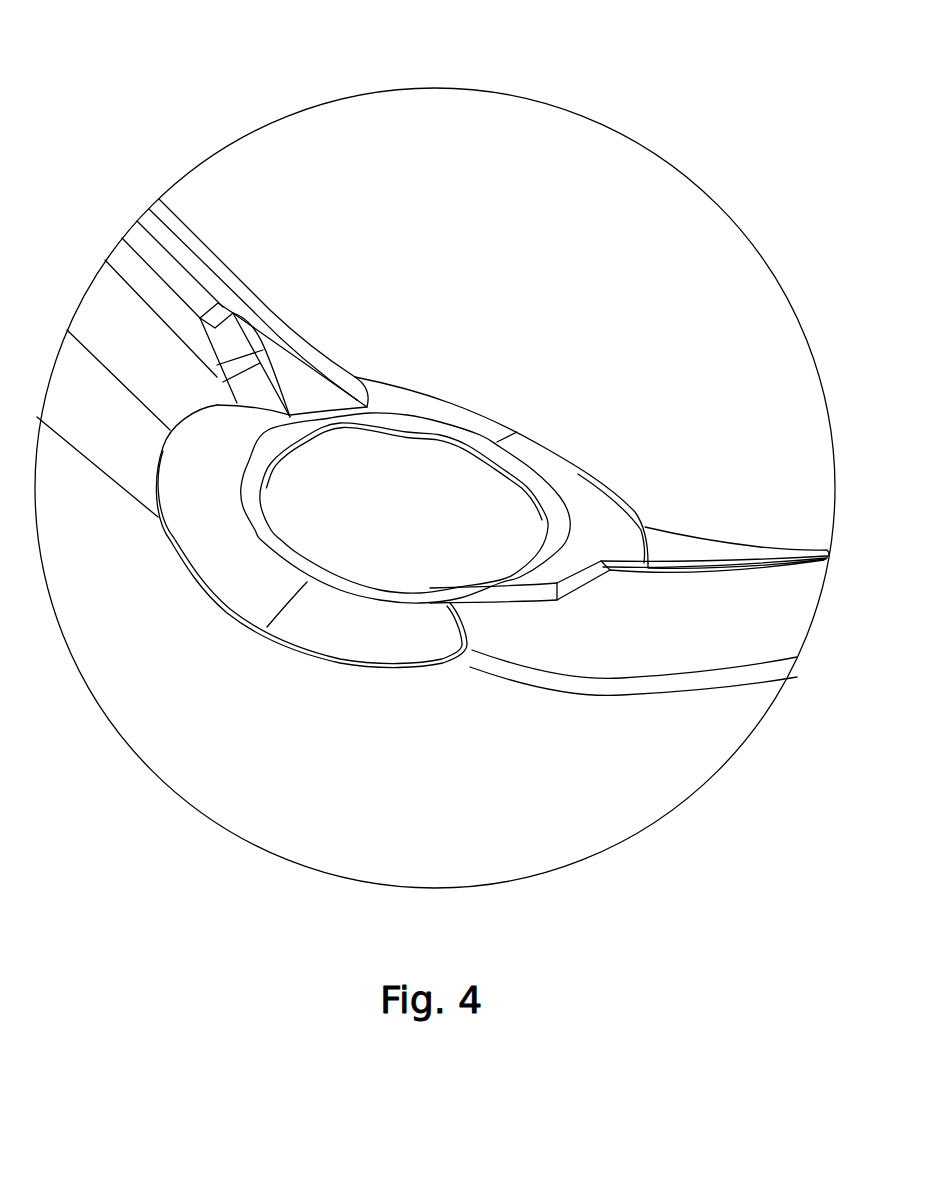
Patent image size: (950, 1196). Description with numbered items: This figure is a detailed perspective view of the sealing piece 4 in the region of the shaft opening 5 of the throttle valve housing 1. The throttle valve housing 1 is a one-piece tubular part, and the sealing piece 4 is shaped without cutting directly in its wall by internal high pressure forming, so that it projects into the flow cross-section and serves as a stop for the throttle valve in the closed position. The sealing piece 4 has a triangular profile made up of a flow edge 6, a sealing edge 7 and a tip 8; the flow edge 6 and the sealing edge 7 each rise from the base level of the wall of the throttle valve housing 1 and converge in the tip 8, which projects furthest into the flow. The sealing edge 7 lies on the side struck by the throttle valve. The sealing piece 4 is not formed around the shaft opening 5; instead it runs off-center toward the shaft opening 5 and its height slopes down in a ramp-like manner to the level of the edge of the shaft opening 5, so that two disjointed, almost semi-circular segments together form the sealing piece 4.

The throttle valve housing 1 is at (642, 752).
The sealing piece 4 is at (160, 260).
The shaft opening 5 is at (400, 525).
The flow edge 6 is at (647, 630).
The sealing edge 7 is at (143, 293).
The tip 8 is at (698, 572).